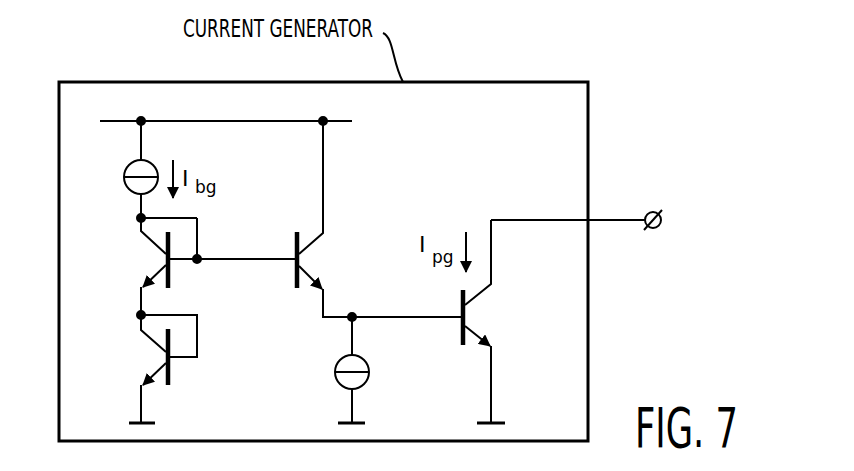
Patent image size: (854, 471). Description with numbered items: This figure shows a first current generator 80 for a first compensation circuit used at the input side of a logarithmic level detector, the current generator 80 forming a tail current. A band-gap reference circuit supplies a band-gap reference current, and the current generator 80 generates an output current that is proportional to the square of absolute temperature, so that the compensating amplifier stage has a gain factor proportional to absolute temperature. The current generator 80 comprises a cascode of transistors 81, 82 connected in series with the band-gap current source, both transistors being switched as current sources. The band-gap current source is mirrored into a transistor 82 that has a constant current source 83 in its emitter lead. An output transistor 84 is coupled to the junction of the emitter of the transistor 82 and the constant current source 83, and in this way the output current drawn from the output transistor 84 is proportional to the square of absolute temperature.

The current generator 80 is at (590, 137).
The transistor 81 is at (152, 262).
The transistor 82 is at (152, 356).
The constant current source 83 is at (370, 372).
The output transistor 84 is at (483, 311).